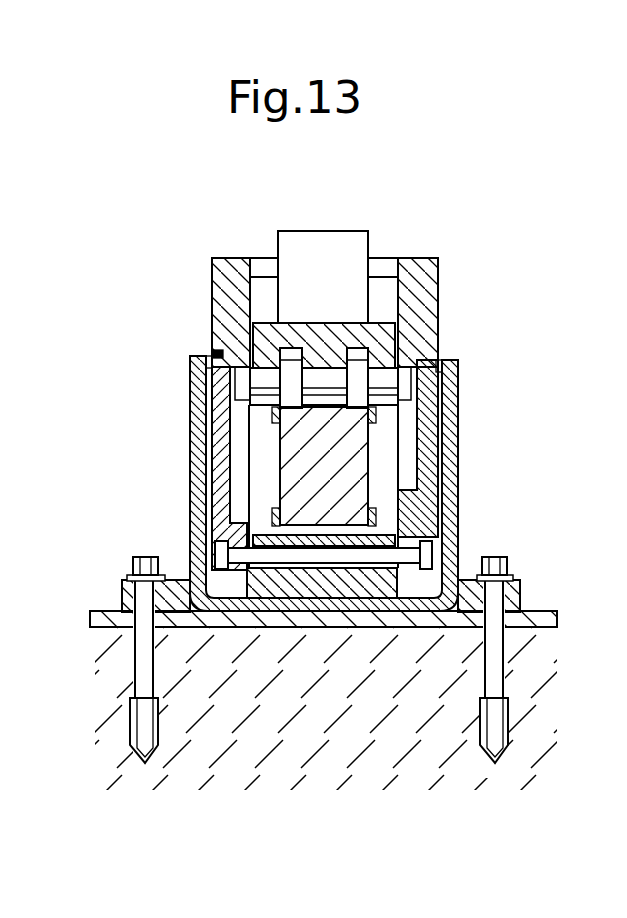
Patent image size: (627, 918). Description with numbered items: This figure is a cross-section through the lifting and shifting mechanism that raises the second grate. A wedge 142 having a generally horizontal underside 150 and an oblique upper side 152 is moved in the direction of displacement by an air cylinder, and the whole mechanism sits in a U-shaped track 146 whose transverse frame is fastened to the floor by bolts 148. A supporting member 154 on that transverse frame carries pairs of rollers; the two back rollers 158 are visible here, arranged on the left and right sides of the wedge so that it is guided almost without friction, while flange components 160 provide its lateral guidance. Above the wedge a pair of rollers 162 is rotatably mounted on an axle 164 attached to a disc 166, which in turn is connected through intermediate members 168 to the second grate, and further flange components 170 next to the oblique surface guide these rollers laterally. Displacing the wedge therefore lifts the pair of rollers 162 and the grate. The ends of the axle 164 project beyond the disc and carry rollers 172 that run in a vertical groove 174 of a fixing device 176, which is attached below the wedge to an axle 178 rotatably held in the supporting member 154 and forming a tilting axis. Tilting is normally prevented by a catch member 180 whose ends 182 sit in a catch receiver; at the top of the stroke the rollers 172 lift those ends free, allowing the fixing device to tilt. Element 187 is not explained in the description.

The wedge 142 is at (408, 482).
The U-shaped track 146 is at (345, 598).
The bolts 148 is at (153, 660).
The horizontal underside 150 is at (320, 527).
The oblique upper side 152 is at (325, 408).
The supporting member 154 is at (257, 600).
The back rollers 158 is at (290, 548).
The flange components 160 is at (215, 524).
The pair of rollers 162 is at (292, 347).
The axle 164 is at (323, 358).
The disc 166 is at (387, 333).
The intermediate members 168 is at (347, 238).
The flange components 170 is at (230, 420).
The rollers 172 is at (212, 380).
The groove 174 is at (218, 478).
The fixing device 176 is at (202, 460).
The axle 178 is at (395, 612).
The catch member 180 is at (230, 262).
The ends 182 is at (213, 353).
The cover strip 187 is at (388, 267).